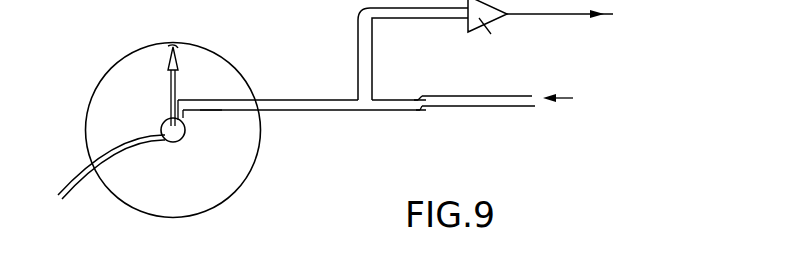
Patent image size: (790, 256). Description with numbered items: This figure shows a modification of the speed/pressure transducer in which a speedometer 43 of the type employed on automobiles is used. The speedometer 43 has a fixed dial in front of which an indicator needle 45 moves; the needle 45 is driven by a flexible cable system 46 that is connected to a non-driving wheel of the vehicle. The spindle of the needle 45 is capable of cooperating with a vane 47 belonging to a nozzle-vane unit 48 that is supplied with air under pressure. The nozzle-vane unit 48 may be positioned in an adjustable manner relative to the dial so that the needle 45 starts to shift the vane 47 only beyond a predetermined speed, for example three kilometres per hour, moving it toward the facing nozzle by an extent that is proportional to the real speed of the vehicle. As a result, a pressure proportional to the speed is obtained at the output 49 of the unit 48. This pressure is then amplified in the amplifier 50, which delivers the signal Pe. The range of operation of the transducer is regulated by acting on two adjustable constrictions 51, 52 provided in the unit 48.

The speedometer 43 is at (98, 66).
The indicator needle 45 is at (182, 82).
The flexible cable system 46 is at (83, 167).
The vane 47 is at (186, 128).
The nozzle-vane unit 48 is at (282, 116).
The output 49 is at (374, 19).
The amplifier 50 is at (556, 34).
The adjustable constriction 51 is at (420, 99).
The adjustable constriction 52 is at (212, 108).